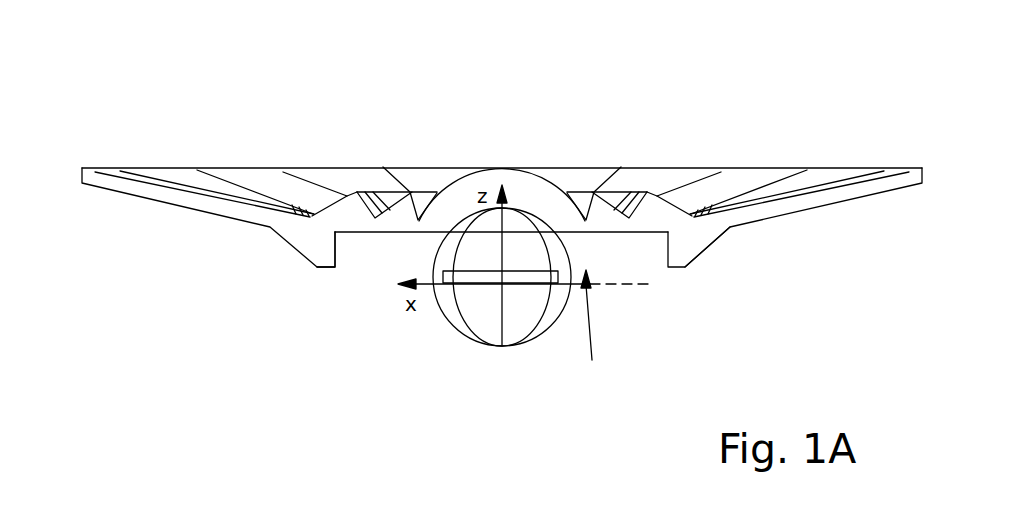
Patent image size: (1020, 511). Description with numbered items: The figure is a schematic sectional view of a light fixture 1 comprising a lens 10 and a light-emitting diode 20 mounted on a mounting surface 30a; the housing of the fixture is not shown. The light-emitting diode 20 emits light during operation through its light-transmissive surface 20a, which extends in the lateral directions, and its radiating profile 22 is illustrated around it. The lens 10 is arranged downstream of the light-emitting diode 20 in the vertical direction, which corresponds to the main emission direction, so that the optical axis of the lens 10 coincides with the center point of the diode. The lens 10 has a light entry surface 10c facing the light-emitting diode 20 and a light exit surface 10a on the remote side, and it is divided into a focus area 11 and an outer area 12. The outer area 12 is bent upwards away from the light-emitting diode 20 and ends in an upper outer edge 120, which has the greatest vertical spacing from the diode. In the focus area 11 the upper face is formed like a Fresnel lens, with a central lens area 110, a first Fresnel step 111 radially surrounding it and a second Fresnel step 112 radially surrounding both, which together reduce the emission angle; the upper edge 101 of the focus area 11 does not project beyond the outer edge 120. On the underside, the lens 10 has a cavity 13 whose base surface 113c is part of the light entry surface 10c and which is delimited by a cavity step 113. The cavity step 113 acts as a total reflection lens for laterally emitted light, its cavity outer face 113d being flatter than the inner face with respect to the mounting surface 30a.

The light fixture 1 is at (494, 190).
The lens 10 is at (826, 138).
The light exit surface 10a is at (279, 178).
The light entry surface 10c is at (358, 240).
The focus area 11 is at (725, 53).
The outer area 12 is at (198, 172).
The cavity 13 is at (591, 332).
The light-emitting diode 20 is at (528, 328).
The light-transmissive surface 20a is at (528, 265).
The radiating profile 22 is at (447, 318).
The mounting surface 30a is at (618, 274).
The upper edge 101 is at (502, 168).
The central lens area 110 is at (528, 175).
The first Fresnel step 111 is at (597, 188).
The second Fresnel step 112 is at (646, 190).
The cavity step 113 is at (695, 230).
The base surface 113c is at (326, 249).
The cavity outer face 113d is at (716, 243).
The upper outer edge 120 is at (82, 176).